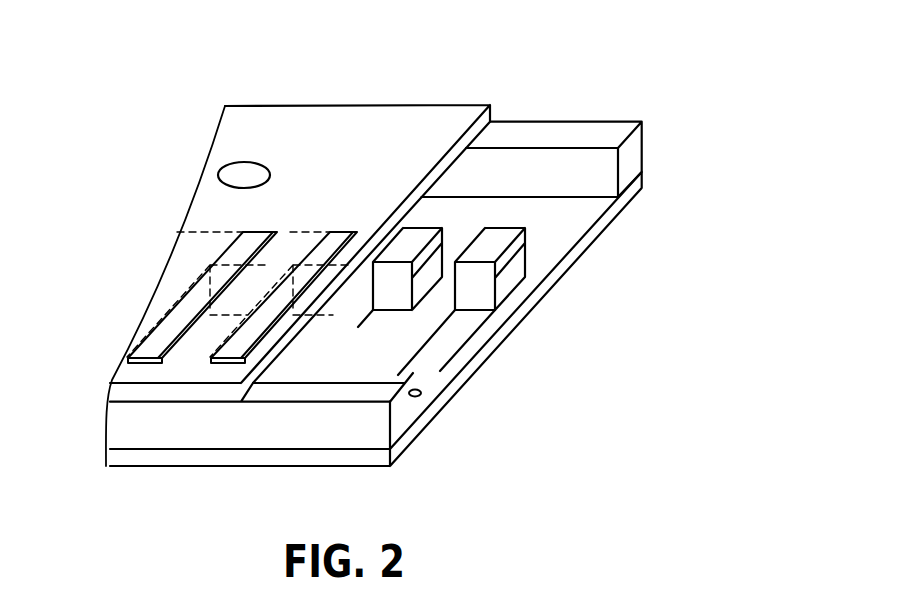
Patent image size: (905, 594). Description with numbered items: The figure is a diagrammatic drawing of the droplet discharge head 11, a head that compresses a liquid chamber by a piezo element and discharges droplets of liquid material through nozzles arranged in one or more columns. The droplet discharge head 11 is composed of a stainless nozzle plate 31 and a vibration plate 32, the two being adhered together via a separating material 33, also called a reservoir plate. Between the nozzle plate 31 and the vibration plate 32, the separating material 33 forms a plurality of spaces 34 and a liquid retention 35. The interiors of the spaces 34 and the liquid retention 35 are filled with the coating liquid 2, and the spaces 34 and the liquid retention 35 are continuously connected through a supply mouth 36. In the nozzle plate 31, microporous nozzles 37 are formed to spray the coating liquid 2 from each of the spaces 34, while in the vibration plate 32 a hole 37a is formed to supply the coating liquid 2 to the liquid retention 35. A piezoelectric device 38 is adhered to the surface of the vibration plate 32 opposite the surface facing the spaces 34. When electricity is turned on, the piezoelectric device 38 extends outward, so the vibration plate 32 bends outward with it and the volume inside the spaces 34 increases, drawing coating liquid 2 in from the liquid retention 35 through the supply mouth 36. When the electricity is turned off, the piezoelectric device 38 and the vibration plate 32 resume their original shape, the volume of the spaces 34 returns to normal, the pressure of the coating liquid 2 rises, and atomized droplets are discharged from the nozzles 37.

The droplet discharge head 11 is at (405, 88).
The coating liquid 2 is at (243, 168).
The nozzle plate 31 is at (559, 263).
The vibration plate 32 is at (254, 386).
The separating material 33 is at (425, 330).
The spaces 34 is at (362, 300).
The liquid retention 35 is at (556, 210).
The supply mouth 36 is at (430, 237).
The nozzles 37 is at (421, 393).
The hole 37a is at (233, 163).
The piezoelectric device 38 is at (165, 330).